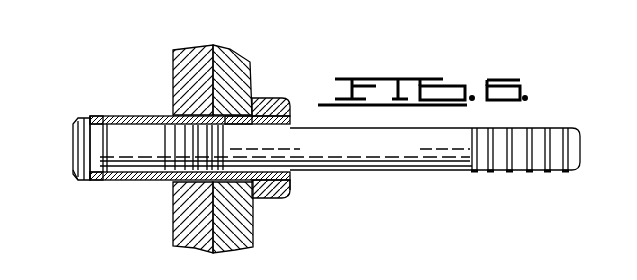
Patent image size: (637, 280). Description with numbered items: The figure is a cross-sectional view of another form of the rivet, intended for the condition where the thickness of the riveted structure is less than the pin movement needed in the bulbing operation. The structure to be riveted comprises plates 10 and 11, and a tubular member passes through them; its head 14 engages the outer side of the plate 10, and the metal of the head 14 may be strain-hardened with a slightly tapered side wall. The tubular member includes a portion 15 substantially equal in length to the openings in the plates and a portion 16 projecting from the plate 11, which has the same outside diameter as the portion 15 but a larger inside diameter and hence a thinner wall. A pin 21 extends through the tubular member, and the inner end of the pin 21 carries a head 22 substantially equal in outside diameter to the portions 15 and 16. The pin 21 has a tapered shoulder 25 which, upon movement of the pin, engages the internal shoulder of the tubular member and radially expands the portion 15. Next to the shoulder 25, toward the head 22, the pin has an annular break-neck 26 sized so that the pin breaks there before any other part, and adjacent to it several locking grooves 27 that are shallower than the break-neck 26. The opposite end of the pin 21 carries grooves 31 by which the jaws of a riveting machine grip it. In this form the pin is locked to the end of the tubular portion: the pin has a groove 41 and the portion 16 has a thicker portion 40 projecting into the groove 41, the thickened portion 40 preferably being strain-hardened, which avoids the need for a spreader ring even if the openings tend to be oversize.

The plate 10 is at (232, 60).
The plate 11 is at (184, 50).
The head 14 is at (287, 100).
The portion 15 is at (235, 114).
The portion 16 is at (127, 115).
The pin 21 is at (403, 172).
The head 22 is at (86, 117).
The tapered shoulder 25 is at (150, 182).
The break-neck 26 is at (291, 183).
The locking grooves 27 is at (170, 182).
The grooves 31 is at (539, 128).
The thicker portion 40 is at (98, 115).
The groove 41 is at (77, 173).